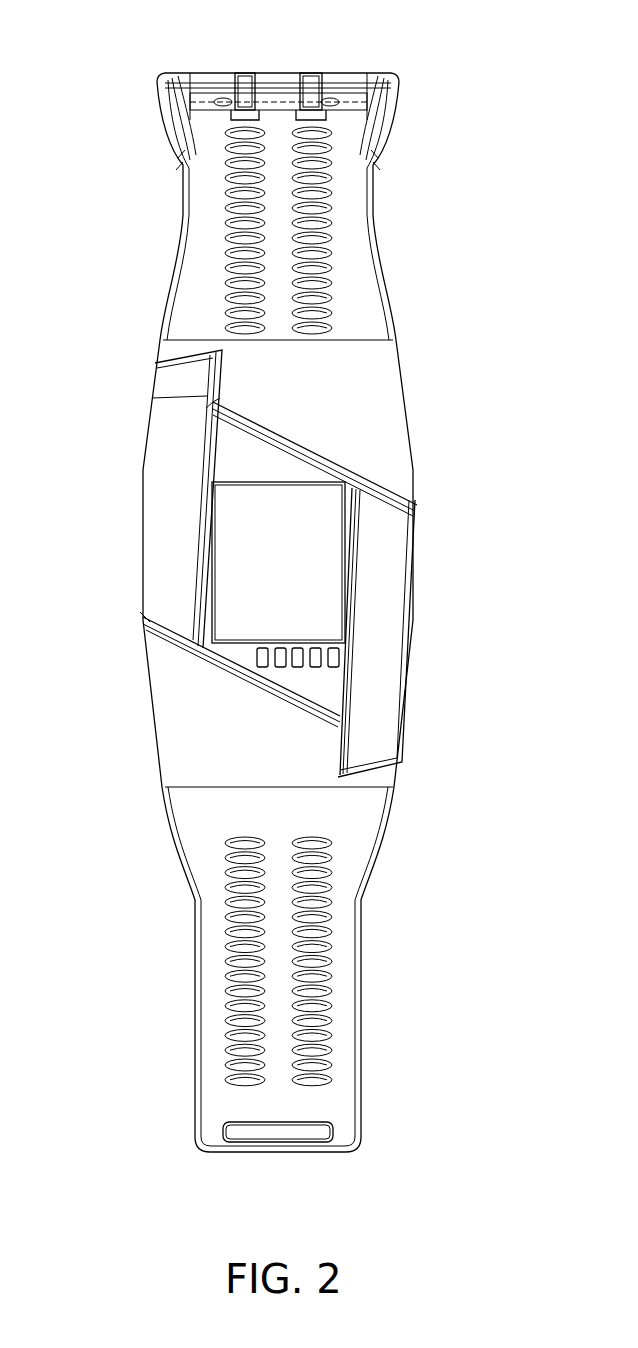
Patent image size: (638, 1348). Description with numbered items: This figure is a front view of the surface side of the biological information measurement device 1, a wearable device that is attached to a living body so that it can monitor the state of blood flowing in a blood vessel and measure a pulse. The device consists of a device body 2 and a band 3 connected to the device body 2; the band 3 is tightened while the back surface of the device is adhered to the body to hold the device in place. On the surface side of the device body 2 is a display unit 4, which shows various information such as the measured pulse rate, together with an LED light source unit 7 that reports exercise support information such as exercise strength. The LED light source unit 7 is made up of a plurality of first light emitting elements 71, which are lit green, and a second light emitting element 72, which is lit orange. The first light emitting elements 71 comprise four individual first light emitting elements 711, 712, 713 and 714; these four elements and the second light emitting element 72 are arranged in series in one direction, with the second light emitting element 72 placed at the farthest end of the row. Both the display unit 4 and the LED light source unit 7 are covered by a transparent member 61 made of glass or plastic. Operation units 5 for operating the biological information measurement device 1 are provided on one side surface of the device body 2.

The biological information measurement device 1 is at (492, 67).
The device body 2 is at (155, 478).
The band 3 is at (373, 210).
The display unit 4 is at (210, 535).
The operation units 5 is at (417, 520).
The transparent member 61 is at (210, 432).
The LED light source unit 7 is at (271, 672).
The first light emitting elements 71 is at (269, 689).
The second light emitting element 72 is at (326, 638).
The first light emitting element 711 is at (262, 667).
The first light emitting element 712 is at (281, 667).
The first light emitting element 713 is at (298, 667).
The first light emitting element 714 is at (316, 667).